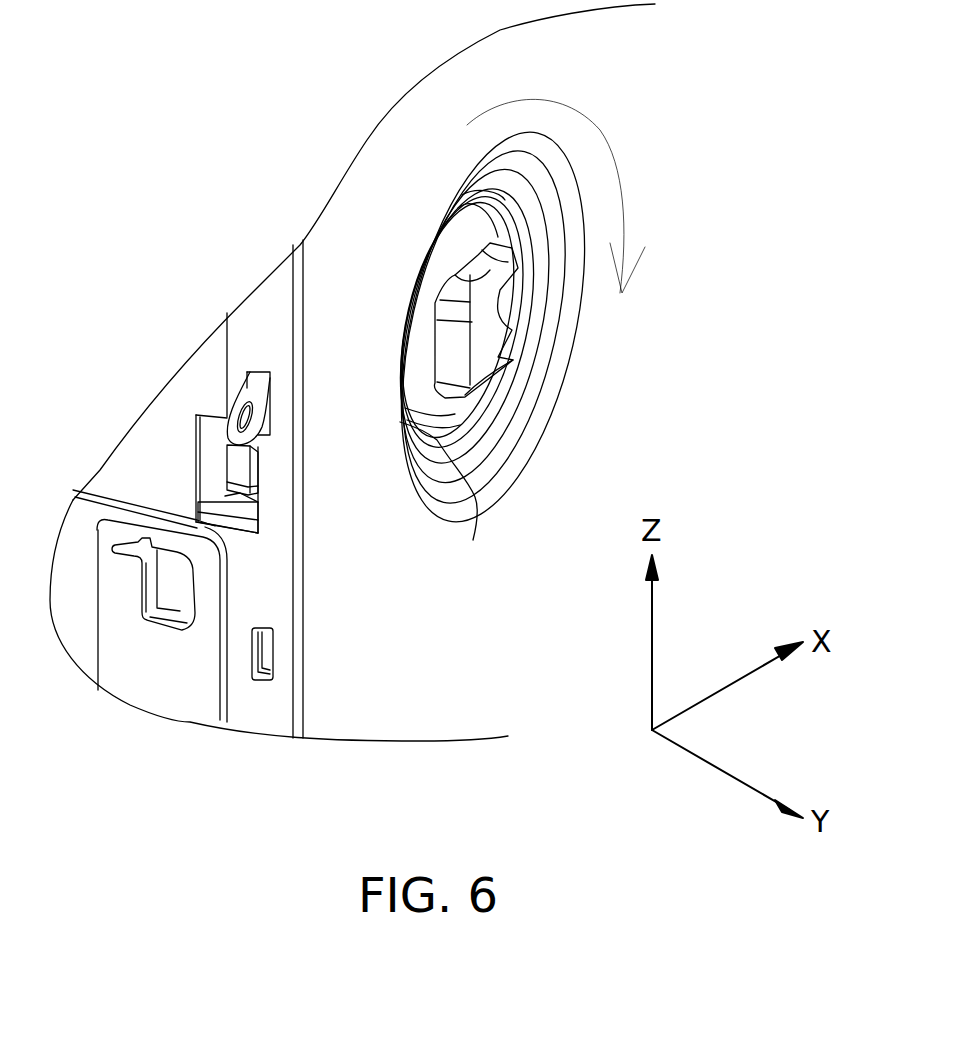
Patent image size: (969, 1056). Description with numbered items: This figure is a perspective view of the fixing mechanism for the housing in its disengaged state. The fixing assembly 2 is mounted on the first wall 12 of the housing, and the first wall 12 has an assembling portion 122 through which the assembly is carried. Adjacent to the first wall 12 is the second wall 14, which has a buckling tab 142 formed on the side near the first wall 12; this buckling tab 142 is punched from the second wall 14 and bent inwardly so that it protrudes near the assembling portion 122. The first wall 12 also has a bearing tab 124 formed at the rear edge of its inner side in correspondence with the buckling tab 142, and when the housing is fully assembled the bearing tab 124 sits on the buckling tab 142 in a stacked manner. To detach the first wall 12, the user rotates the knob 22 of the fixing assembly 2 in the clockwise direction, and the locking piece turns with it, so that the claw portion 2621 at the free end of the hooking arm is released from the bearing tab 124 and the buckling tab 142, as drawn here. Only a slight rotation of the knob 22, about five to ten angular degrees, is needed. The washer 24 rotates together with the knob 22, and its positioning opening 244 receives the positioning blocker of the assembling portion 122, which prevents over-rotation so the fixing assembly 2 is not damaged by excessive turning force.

The fixing assembly 2 is at (576, 387).
The first wall 12 is at (357, 683).
The second wall 14 is at (143, 435).
The knob 22 is at (498, 327).
The washer 24 is at (452, 257).
The assembling portion 122 is at (500, 438).
The bearing tab 124 is at (220, 495).
The buckling tab 142 is at (250, 502).
The positioning opening 244 is at (448, 490).
The claw portion 2621 is at (242, 472).